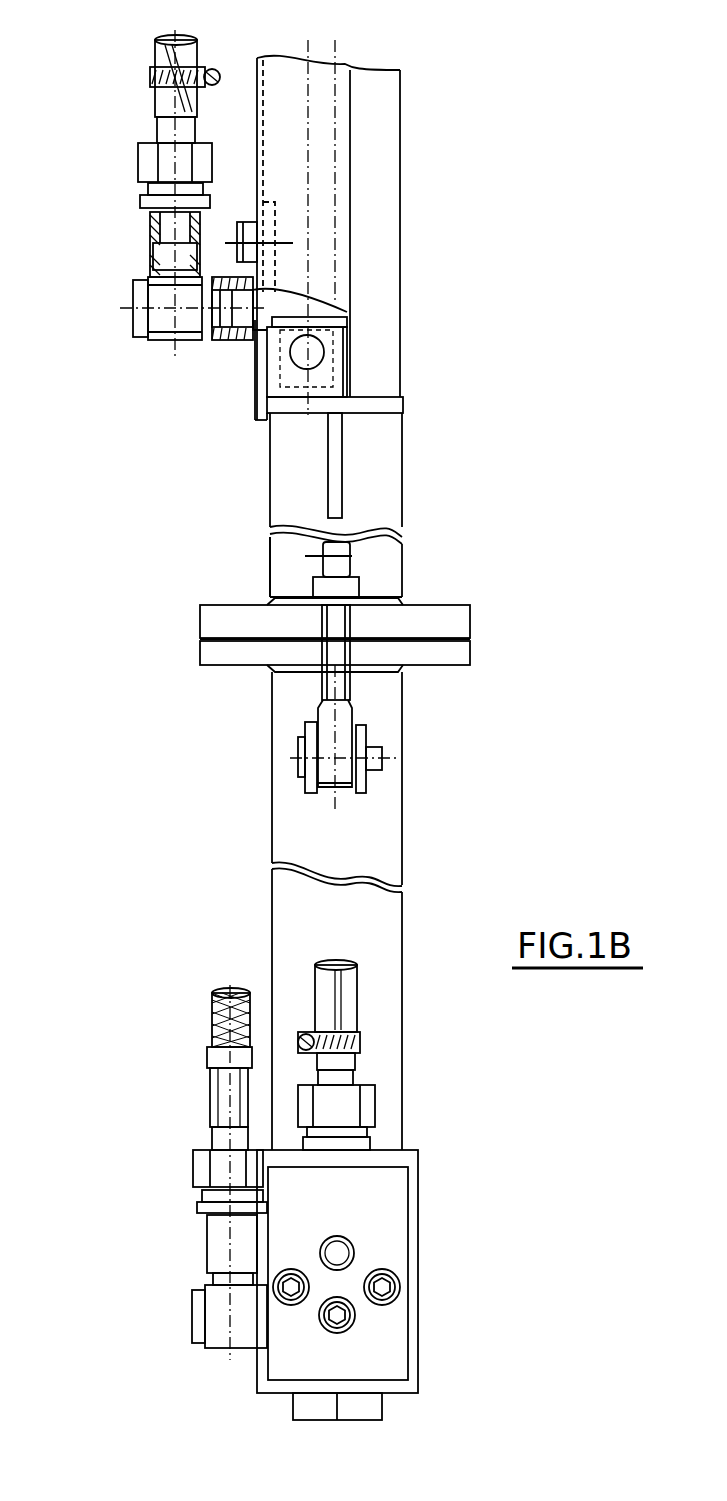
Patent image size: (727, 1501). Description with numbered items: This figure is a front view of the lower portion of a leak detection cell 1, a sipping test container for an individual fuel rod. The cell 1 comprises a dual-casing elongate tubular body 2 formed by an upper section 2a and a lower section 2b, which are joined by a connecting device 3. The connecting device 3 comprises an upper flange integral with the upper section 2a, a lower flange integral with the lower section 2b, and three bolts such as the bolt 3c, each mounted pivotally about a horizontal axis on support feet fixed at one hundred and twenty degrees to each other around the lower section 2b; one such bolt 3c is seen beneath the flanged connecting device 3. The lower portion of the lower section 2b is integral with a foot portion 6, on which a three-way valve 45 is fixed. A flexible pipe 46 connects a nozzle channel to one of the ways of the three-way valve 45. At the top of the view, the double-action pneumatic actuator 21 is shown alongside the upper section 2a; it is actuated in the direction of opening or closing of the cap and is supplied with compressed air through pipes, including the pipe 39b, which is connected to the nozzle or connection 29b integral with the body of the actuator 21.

The leak detection cell 1 is at (245, 559).
The tubular body 2 is at (383, 472).
The upper section 2a is at (387, 560).
The lower section 2b is at (378, 842).
The connecting device 3 is at (455, 596).
The bolt 3c is at (340, 715).
The foot portion 6 is at (387, 1202).
The pneumatic actuator 21 is at (328, 230).
The connection 29b is at (230, 341).
The pipe 39b is at (143, 158).
The three-way valve 45 is at (412, 1282).
The flexible pipe 46 is at (210, 1057).